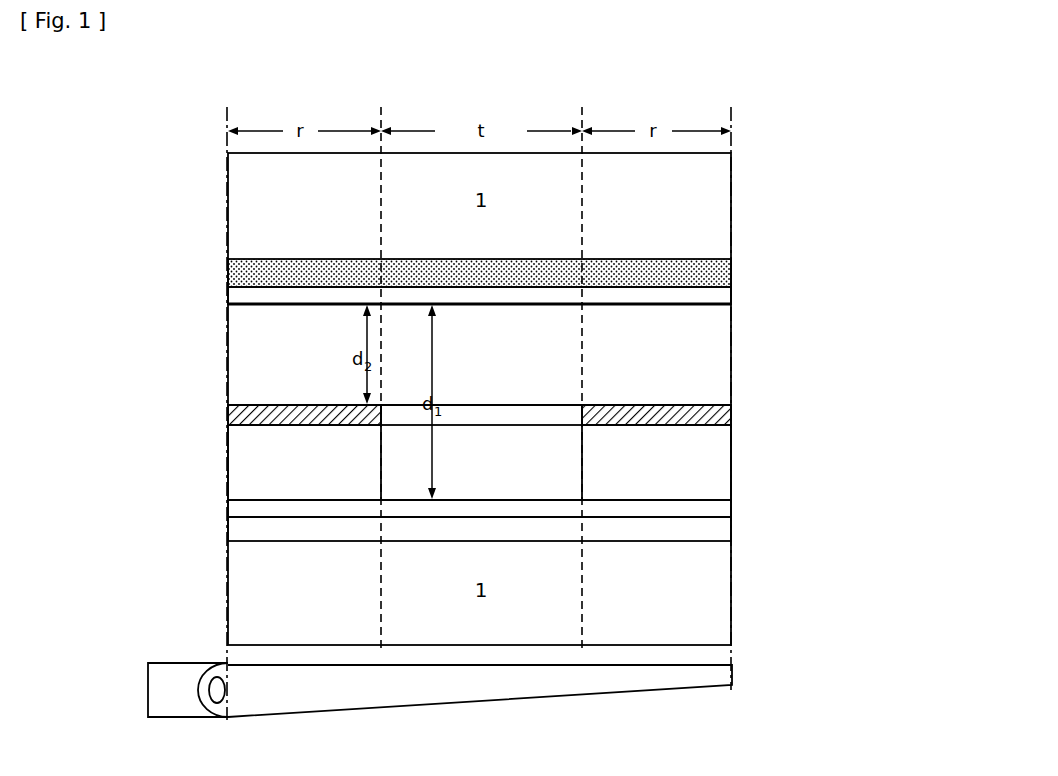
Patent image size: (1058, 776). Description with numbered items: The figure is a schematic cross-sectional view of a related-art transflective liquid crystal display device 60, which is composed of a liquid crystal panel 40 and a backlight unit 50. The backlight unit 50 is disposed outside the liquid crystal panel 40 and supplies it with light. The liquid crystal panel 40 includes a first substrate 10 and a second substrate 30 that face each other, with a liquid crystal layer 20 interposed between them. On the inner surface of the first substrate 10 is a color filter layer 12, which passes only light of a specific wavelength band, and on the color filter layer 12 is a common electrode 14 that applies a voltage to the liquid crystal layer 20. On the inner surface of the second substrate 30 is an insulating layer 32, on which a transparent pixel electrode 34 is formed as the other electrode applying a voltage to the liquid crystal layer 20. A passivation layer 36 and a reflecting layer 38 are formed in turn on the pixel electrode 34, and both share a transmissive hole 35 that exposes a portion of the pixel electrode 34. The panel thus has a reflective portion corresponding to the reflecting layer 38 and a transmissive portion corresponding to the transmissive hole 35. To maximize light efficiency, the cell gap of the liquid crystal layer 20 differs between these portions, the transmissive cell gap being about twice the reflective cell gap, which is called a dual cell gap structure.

The first substrate 10 is at (228, 155).
The color filter layer 12 is at (731, 268).
The common electrode 14 is at (731, 300).
The liquid crystal layer 20 is at (228, 306).
The second substrate 30 is at (228, 407).
The insulating layer 32 is at (731, 535).
The transparent pixel electrode 34 is at (731, 504).
The transmissive hole 35 is at (507, 448).
The passivation layer 36 is at (316, 460).
The reflecting layer 38 is at (275, 405).
The liquid crystal panel 40 is at (158, 528).
The backlight unit 50 is at (153, 663).
The transflective liquid crystal display device 60 is at (102, 358).